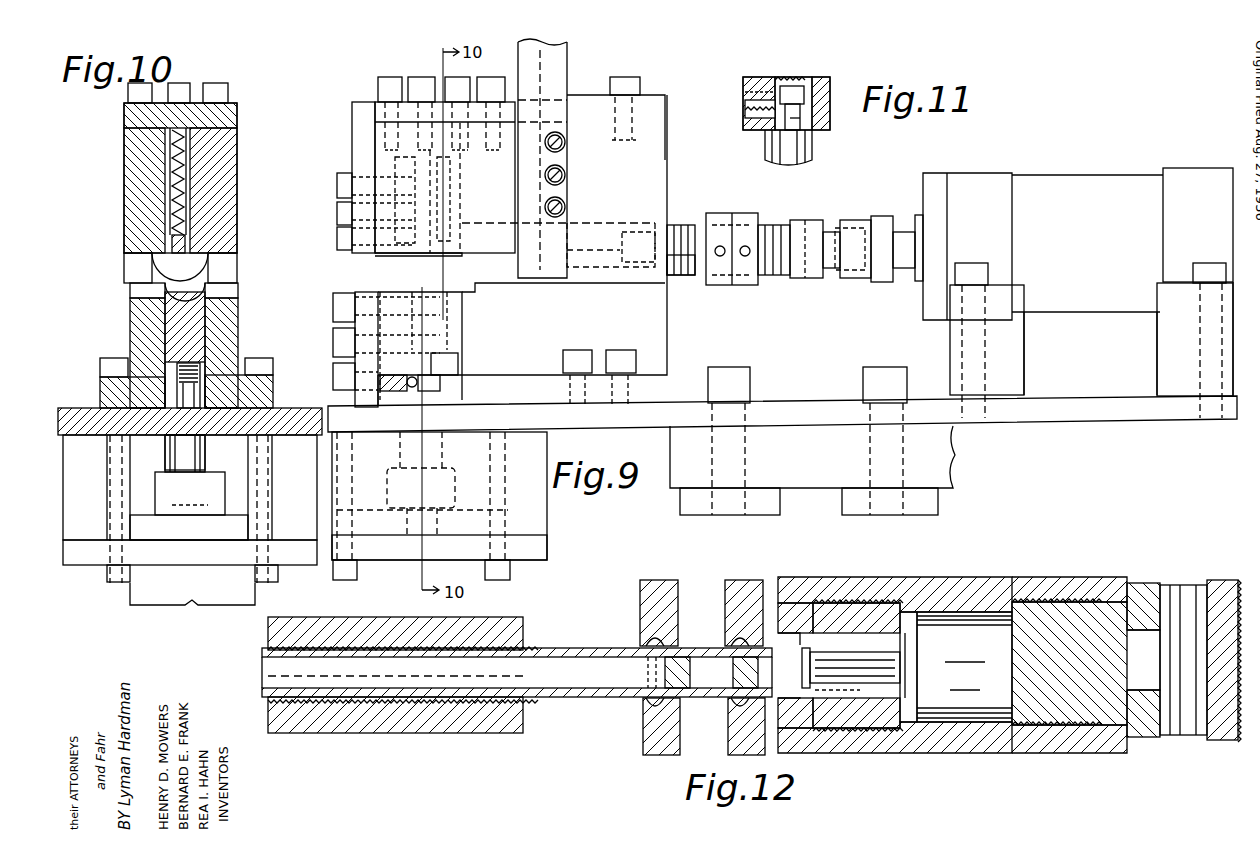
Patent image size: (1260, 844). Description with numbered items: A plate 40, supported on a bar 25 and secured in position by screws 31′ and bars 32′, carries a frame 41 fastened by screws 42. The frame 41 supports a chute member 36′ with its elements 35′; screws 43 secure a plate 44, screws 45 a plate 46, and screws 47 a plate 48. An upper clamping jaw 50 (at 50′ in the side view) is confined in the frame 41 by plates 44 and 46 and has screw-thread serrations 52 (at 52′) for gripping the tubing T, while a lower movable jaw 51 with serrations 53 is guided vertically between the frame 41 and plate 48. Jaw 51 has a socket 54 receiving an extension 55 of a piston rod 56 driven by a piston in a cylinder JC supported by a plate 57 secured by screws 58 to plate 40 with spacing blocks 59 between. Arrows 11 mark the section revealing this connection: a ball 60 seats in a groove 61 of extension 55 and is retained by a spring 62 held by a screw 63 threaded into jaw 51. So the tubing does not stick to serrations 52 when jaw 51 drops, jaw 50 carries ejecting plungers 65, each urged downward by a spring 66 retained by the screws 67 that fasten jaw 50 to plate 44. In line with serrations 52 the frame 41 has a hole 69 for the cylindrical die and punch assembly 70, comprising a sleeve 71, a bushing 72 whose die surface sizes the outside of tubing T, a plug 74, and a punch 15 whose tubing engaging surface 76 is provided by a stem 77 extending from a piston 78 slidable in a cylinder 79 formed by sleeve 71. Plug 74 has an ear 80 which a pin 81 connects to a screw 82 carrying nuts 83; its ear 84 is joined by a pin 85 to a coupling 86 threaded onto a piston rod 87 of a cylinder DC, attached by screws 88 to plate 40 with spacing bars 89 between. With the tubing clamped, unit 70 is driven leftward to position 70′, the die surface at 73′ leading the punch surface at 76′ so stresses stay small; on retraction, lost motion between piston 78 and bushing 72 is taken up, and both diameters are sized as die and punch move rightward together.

In FIG. 10, the screws 43 is at (228, 92).
In FIG. 9, the screws 43 is at (632, 77).
In FIG. 10, the plate 44 is at (237, 118).
In FIG. 9, the plate 44 is at (661, 100).
In FIG. 10, the upper clamping jaw 50 is at (200, 158).
In FIG. 12, the upper clamping jaw 50 is at (403, 625).
In FIG. 10, the spring 66 is at (196, 176).
In FIG. 10, the screws 67 is at (178, 140).
In FIG. 9, the screws 67 is at (428, 80).
In FIG. 10, the ejecting plungers 65 is at (190, 225).
In FIG. 10, the serrations 52 is at (192, 252).
In FIG. 12, the serrations 52 is at (270, 648).
In FIG. 10, the hole 69 is at (214, 264).
In FIG. 9, the hole 69 is at (492, 223).
In FIG. 10, the lower movable jaw 51 is at (200, 325).
In FIG. 9, the lower movable jaw 51 is at (465, 310).
In FIG. 11, the lower movable jaw 51 is at (776, 82).
In FIG. 12, the lower movable jaw 51 is at (523, 723).
In FIG. 10, the tube workpiece 11 is at (212, 341).
In FIG. 10, the socket 54 is at (155, 368).
In FIG. 11, the socket 54 is at (792, 84).
In FIG. 10, the extension 55 is at (150, 385).
In FIG. 11, the extension 55 is at (815, 82).
In FIG. 10, the plate 40 is at (302, 396).
In FIG. 9, the plate 40 is at (810, 395).
In FIG. 10, the piston rod 56 is at (172, 450).
In FIG. 11, the piston rod 56 is at (815, 150).
In FIG. 10, the plate 57 is at (95, 565).
In FIG. 9, the plate 57 is at (547, 550).
In FIG. 10, the screws 58 is at (128, 578).
In FIG. 9, the screws 58 is at (510, 570).
In FIG. 10, the spacing blocks 59 is at (105, 540).
In FIG. 9, the spacing blocks 59 is at (547, 520).
In FIG. 10, the cylinder JC is at (128, 602).
In FIG. 9, the chute member 36′ is at (567, 98).
In FIG. 9, the screws 35′ is at (564, 203).
In FIG. 9, the plate 46 is at (352, 140).
In FIG. 9, the screws 45 is at (337, 196).
In FIG. 9, the upper die 50′ is at (405, 256).
In FIG. 9, the plunger 52′ is at (432, 256).
In FIG. 9, the plate 48 is at (362, 293).
In FIG. 9, the screws 47 is at (355, 340).
In FIG. 9, the spring 62 is at (413, 376).
In FIG. 11, the spring 62 is at (745, 88).
In FIG. 9, the ball 60 is at (420, 374).
In FIG. 11, the ball 60 is at (788, 120).
In FIG. 9, the groove 61 is at (432, 383).
In FIG. 11, the groove 61 is at (802, 110).
In FIG. 9, the screw 63 is at (392, 395).
In FIG. 11, the screw 63 is at (752, 114).
In FIG. 9, the screws 42 is at (615, 350).
In FIG. 9, the frame 41 is at (667, 360).
In FIG. 9, the screws 31′ is at (863, 366).
In FIG. 9, the bar 25 is at (955, 470).
In FIG. 9, the bars 32′ is at (842, 505).
In FIG. 9, the ear 80 is at (676, 278).
In FIG. 12, the ear 80 is at (1165, 585).
In FIG. 9, the pin 81 is at (682, 230).
In FIG. 12, the pin 81 is at (1216, 583).
In FIG. 9, the nuts 83 is at (748, 285).
In FIG. 9, the screw 82 is at (772, 285).
In FIG. 9, the pin 85 is at (812, 278).
In FIG. 9, the ear 84 is at (830, 268).
In FIG. 9, the coupling 86 is at (858, 220).
In FIG. 9, the piston rod 87 is at (898, 275).
In FIG. 9, the screws 88 is at (985, 262).
In FIG. 9, the spacing bars 89 is at (1155, 358).
In FIG. 9, the cylinder DC is at (1130, 176).
In FIG. 12, the serrations 53 is at (445, 700).
In FIG. 12, the tubing T is at (598, 652).
In FIG. 12, the leftward position of die and punch assembly 70′ is at (642, 592).
In FIG. 12, the seal 73′ is at (650, 640).
In FIG. 12, the plug 76′ is at (676, 690).
In FIG. 12, the sleeve 71 is at (990, 753).
In FIG. 12, the bushing 72 is at (835, 603).
In FIG. 12, the bore 15 is at (862, 633).
In FIG. 12, the cylindrical die and punch assembly 70 is at (955, 590).
In FIG. 12, the plug 74 is at (1062, 602).
In FIG. 12, the piston 78 is at (978, 612).
In FIG. 12, the tubing engaging surface 76 is at (812, 653).
In FIG. 12, the stem 77 is at (852, 684).
In FIG. 12, the cylinder 79 is at (908, 722).